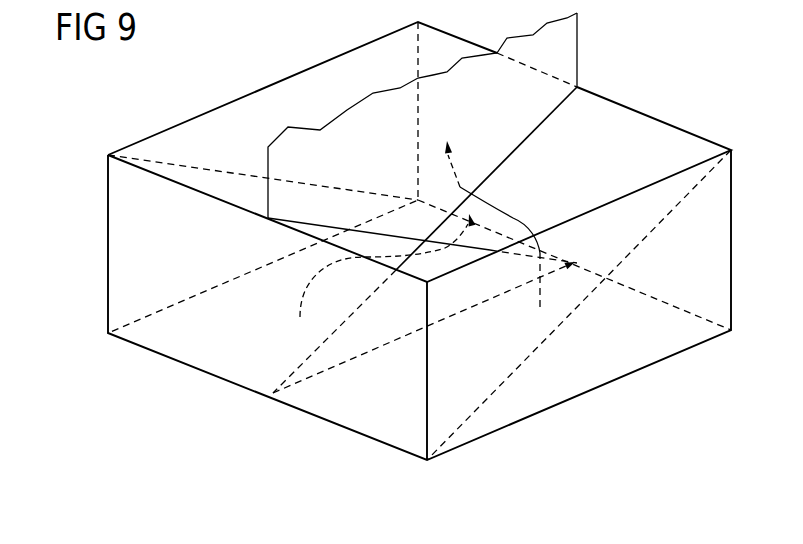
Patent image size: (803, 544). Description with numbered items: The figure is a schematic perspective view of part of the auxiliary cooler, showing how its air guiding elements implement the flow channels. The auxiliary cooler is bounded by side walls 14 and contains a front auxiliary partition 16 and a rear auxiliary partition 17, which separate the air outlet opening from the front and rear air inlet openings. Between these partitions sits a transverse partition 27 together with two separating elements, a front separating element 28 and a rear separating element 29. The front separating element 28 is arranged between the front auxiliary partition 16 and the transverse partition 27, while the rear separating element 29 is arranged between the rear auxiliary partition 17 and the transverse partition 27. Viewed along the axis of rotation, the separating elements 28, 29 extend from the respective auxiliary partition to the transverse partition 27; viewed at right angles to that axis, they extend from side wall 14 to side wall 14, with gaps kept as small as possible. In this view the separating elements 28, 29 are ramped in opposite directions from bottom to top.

The side wall 14 is at (122, 248).
The front auxiliary partition 16 is at (190, 133).
The rear auxiliary partition 17 is at (433, 425).
The transverse partition 27 is at (567, 45).
The front separating element 28 is at (262, 183).
The rear separating element 29 is at (648, 233).